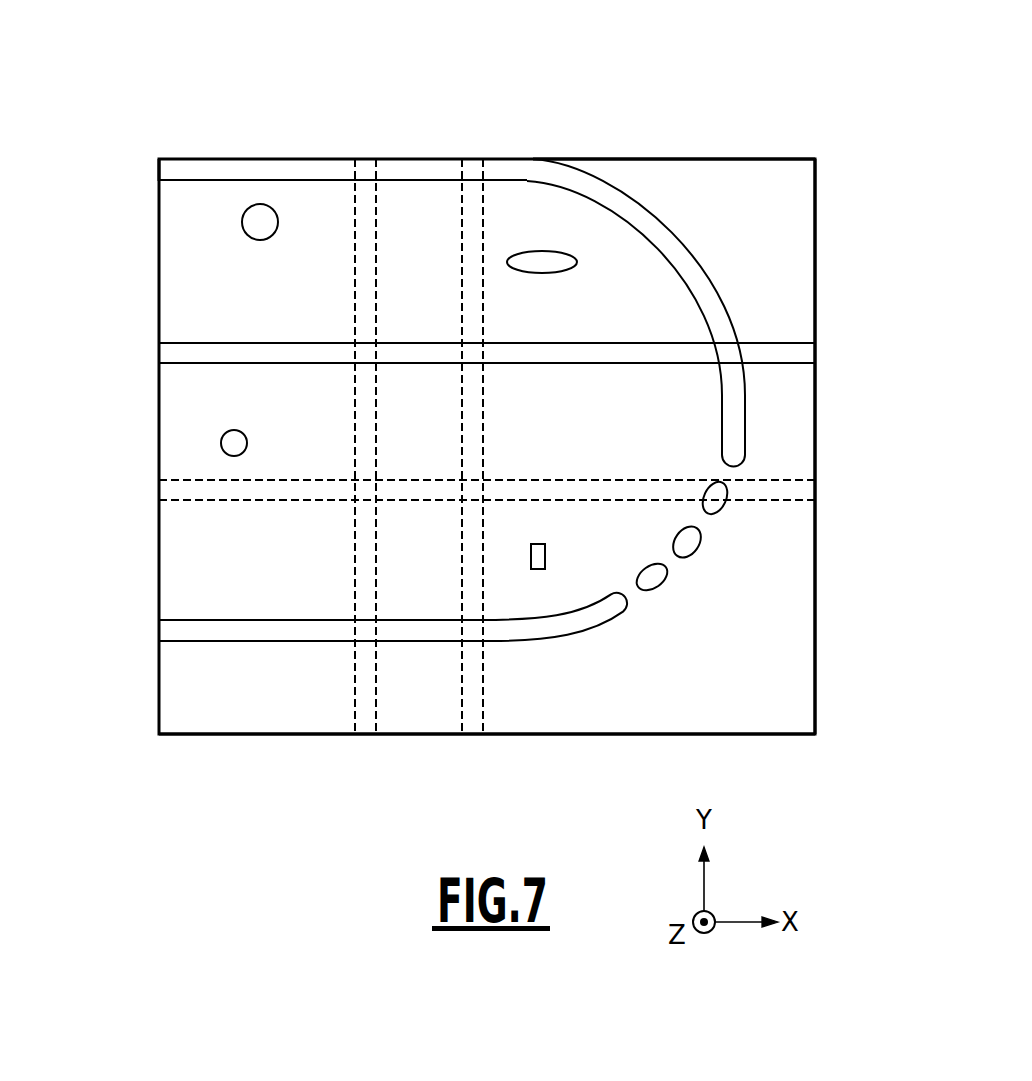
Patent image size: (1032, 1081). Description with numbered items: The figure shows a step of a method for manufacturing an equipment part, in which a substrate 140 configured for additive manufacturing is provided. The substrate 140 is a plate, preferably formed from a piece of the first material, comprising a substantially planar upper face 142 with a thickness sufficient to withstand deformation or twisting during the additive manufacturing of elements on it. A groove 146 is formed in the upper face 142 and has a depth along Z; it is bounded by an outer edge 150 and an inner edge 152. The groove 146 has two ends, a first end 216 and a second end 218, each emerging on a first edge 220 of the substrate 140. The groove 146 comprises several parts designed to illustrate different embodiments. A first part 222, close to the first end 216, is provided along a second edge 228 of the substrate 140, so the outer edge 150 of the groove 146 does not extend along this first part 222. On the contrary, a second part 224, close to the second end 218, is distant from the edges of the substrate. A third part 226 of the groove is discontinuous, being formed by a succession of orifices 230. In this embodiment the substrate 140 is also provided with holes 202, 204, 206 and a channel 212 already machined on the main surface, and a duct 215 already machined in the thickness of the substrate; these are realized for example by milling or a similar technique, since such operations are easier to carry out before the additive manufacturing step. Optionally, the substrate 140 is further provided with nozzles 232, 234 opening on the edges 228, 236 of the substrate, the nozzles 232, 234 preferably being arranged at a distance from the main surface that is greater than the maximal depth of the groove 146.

The substrate 140 is at (135, 818).
The upper face 142 is at (780, 174).
The groove 146 is at (706, 293).
The outer edge 150 is at (205, 641).
The inner edge 152 is at (398, 182).
The hole 202 is at (260, 222).
The hole 204 is at (541, 262).
The hole 206 is at (234, 445).
The channel 212 is at (181, 359).
The duct 215 is at (222, 494).
The first end 216 is at (142, 165).
The second end 218 is at (142, 623).
The first edge 220 is at (157, 230).
The first part 222 is at (320, 125).
The second part 224 is at (235, 669).
The third part 226 is at (725, 571).
The second edge 228 is at (694, 158).
The orifices 230 is at (688, 543).
The nozzle 232 is at (364, 694).
The nozzle 234 is at (473, 694).
The edge 236 is at (775, 735).